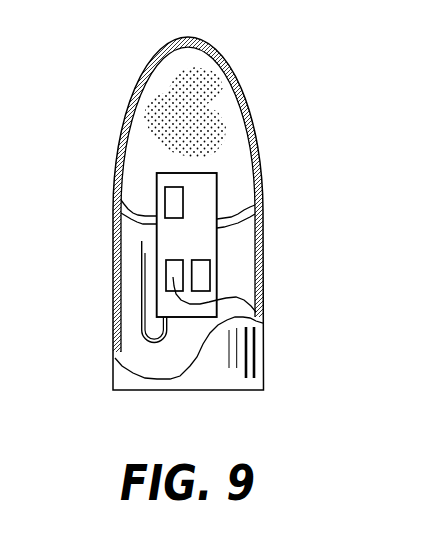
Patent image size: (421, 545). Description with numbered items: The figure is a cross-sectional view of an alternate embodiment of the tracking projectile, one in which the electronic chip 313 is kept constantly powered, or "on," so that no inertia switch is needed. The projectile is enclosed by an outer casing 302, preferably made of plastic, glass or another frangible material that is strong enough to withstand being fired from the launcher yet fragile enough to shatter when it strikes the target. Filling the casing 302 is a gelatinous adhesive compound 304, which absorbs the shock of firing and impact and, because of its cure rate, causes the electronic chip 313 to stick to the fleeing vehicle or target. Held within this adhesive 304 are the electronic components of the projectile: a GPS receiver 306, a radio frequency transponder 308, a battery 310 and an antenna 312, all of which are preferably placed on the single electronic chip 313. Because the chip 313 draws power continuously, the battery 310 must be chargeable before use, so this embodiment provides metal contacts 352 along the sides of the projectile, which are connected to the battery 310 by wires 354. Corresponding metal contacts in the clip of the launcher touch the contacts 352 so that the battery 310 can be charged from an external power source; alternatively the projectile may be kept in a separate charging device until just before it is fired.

The outer casing 302 is at (210, 272).
The gelatinous adhesive compound 304 is at (234, 105).
The GPS receiver 306 is at (288, 347).
The radio frequency transponder 308 is at (266, 279).
The battery 310 is at (136, 206).
The antenna 312 is at (102, 305).
The electronic chip 313 is at (254, 267).
The metal contacts 352 is at (190, 215).
The wires 354 is at (175, 166).